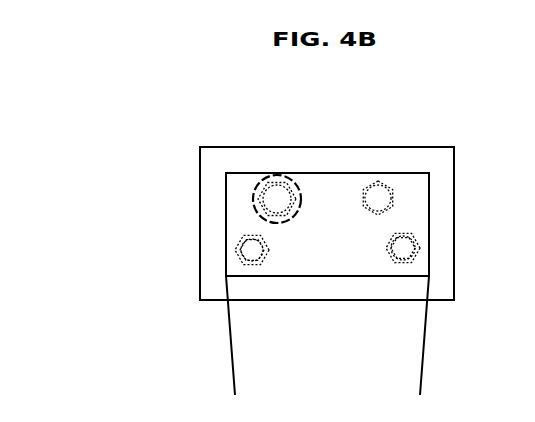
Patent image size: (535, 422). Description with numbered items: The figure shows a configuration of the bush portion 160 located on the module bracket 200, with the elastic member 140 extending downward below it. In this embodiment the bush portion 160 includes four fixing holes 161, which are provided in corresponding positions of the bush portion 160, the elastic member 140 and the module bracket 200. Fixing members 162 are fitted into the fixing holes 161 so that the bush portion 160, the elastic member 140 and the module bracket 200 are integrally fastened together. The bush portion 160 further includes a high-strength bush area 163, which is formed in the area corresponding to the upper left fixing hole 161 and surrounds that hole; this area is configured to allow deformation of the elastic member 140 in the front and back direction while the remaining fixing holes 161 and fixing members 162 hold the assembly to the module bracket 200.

The elastic member 140 is at (397, 366).
The bush portion 160 is at (325, 190).
The fixing holes 161 is at (274, 190).
The fixing members 162 is at (254, 200).
The high-strength bush area 163 is at (262, 218).
The module bracket 200 is at (212, 157).